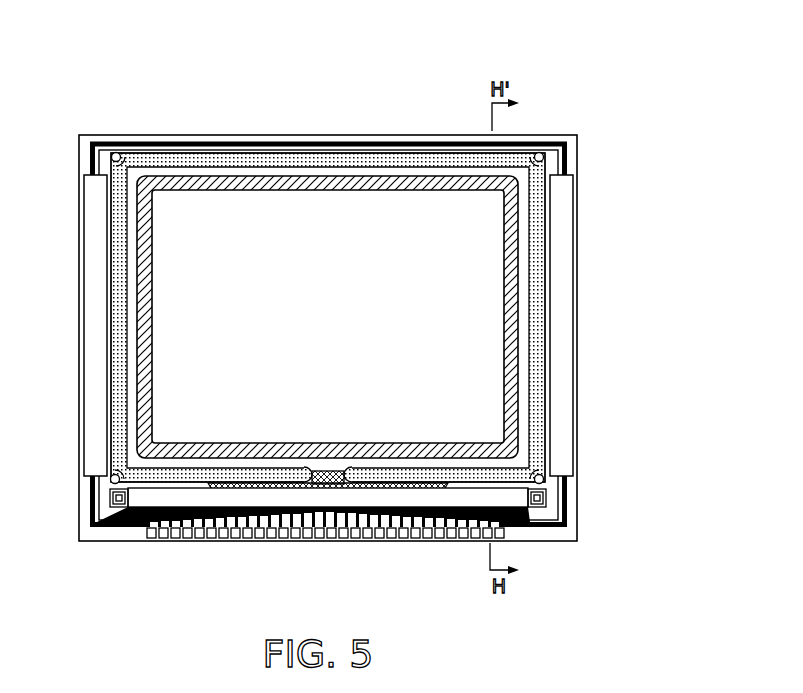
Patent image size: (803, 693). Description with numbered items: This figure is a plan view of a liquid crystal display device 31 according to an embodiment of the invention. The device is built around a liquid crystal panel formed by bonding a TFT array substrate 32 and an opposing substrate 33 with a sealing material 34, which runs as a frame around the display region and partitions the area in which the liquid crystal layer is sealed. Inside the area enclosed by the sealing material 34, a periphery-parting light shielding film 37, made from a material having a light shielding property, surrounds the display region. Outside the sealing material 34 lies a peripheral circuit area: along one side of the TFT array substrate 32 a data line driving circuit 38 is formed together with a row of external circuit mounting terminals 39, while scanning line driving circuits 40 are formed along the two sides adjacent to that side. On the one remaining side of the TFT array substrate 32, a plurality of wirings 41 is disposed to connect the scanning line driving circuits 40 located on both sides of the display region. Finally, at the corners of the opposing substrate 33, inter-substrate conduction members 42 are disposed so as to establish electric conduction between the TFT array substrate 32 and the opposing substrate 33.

The liquid crystal display device 31 is at (369, 117).
The TFT array substrate 32 is at (236, 148).
The opposing substrate 33 is at (314, 152).
The sealing material 34 is at (540, 340).
The light shielding film 37 is at (512, 262).
The data line driving circuit 38 is at (152, 497).
The external circuit mounting terminals 39 is at (466, 541).
The scanning line driving circuits 40 is at (95, 443).
The wirings 41 is at (192, 140).
The inter-substrate conduction members 42 is at (118, 152).